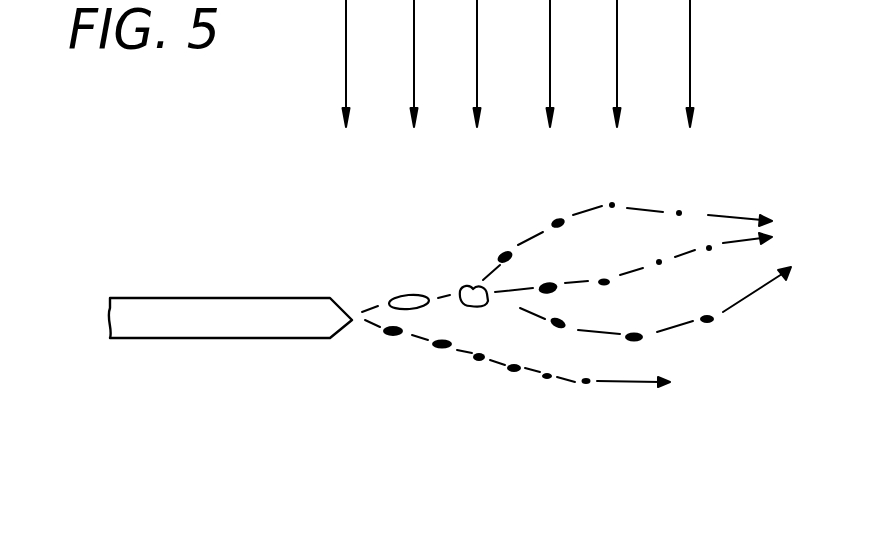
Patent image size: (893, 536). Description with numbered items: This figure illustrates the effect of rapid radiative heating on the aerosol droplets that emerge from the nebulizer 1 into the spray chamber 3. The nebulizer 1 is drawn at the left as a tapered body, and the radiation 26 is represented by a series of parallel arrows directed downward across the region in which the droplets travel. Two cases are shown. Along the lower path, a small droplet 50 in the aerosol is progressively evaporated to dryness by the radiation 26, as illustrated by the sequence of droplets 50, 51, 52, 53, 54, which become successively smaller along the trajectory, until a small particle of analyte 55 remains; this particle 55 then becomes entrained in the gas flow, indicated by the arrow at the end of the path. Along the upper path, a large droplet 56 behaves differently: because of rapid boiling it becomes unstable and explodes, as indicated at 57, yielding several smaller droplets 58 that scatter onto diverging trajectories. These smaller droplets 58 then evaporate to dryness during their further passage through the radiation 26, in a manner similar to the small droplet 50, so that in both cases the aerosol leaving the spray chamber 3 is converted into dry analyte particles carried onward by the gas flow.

The nebulizer 1 is at (155, 325).
The spray chamber 3 is at (312, 457).
The radiation 26 is at (753, 63).
The droplet 50 is at (393, 338).
The droplet 51 is at (450, 350).
The droplet 52 is at (479, 362).
The droplet 53 is at (514, 374).
The droplet 54 is at (548, 380).
The small particle of analyte 55 is at (588, 384).
The large droplet 56 is at (405, 296).
The exploding droplet 57 is at (468, 288).
The smaller droplets 58 is at (503, 252).